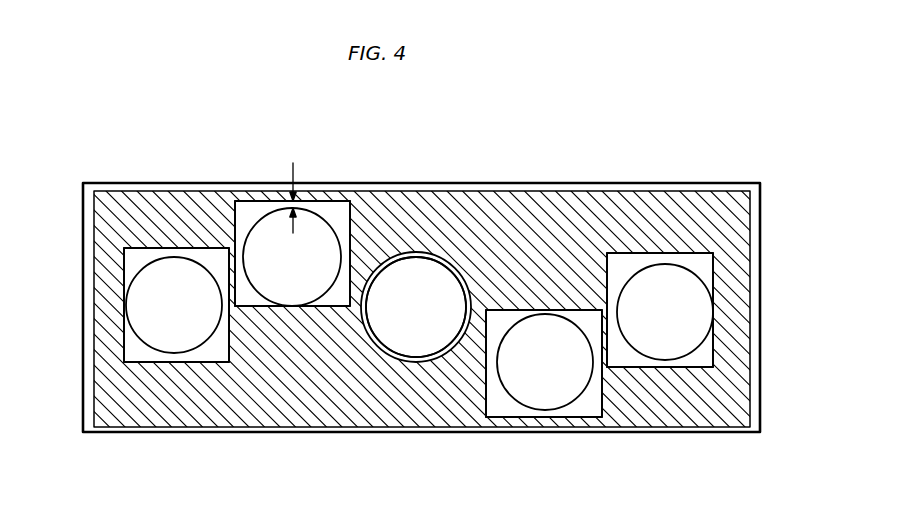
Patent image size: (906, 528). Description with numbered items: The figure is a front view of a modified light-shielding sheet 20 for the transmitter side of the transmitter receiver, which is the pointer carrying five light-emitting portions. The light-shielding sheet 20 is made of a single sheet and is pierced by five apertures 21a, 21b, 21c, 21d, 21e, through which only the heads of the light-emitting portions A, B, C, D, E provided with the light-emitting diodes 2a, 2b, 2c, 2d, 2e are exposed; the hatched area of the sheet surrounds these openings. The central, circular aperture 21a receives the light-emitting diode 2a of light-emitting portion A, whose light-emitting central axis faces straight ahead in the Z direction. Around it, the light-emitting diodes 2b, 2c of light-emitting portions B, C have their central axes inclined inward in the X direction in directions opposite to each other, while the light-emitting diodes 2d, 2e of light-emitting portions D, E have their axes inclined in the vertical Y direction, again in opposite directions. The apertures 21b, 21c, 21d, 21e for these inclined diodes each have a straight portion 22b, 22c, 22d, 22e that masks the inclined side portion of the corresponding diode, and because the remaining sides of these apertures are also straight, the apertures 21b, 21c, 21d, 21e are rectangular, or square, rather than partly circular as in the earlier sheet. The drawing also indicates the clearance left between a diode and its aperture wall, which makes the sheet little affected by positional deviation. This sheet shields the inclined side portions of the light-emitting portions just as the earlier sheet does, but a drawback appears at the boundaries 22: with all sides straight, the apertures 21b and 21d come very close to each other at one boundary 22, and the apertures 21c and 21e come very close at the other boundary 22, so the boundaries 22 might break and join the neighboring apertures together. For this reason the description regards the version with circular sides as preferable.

The light-shielding sheet 20 is at (755, 233).
The boundary 22 is at (219, 244).
The aperture 21a is at (419, 362).
The aperture 21b is at (167, 362).
The aperture 21c is at (678, 367).
The aperture 21d is at (330, 201).
The aperture 21e is at (570, 417).
The light-emitting diode 2a is at (425, 270).
The light-emitting diode 2b is at (176, 267).
The light-emitting diode 2c is at (645, 350).
The light-emitting diode 2d is at (270, 227).
The light-emitting diode 2e is at (518, 388).
The straight portion 22b is at (122, 334).
The straight portion 22c is at (714, 349).
The straight portion 22d is at (252, 307).
The straight portion 22e is at (580, 310).
The light-emitting portion A is at (381, 355).
The light-emitting portion B is at (137, 374).
The light-emitting portion C is at (704, 376).
The light-emitting portion D is at (282, 317).
The light-emitting portion E is at (478, 406).